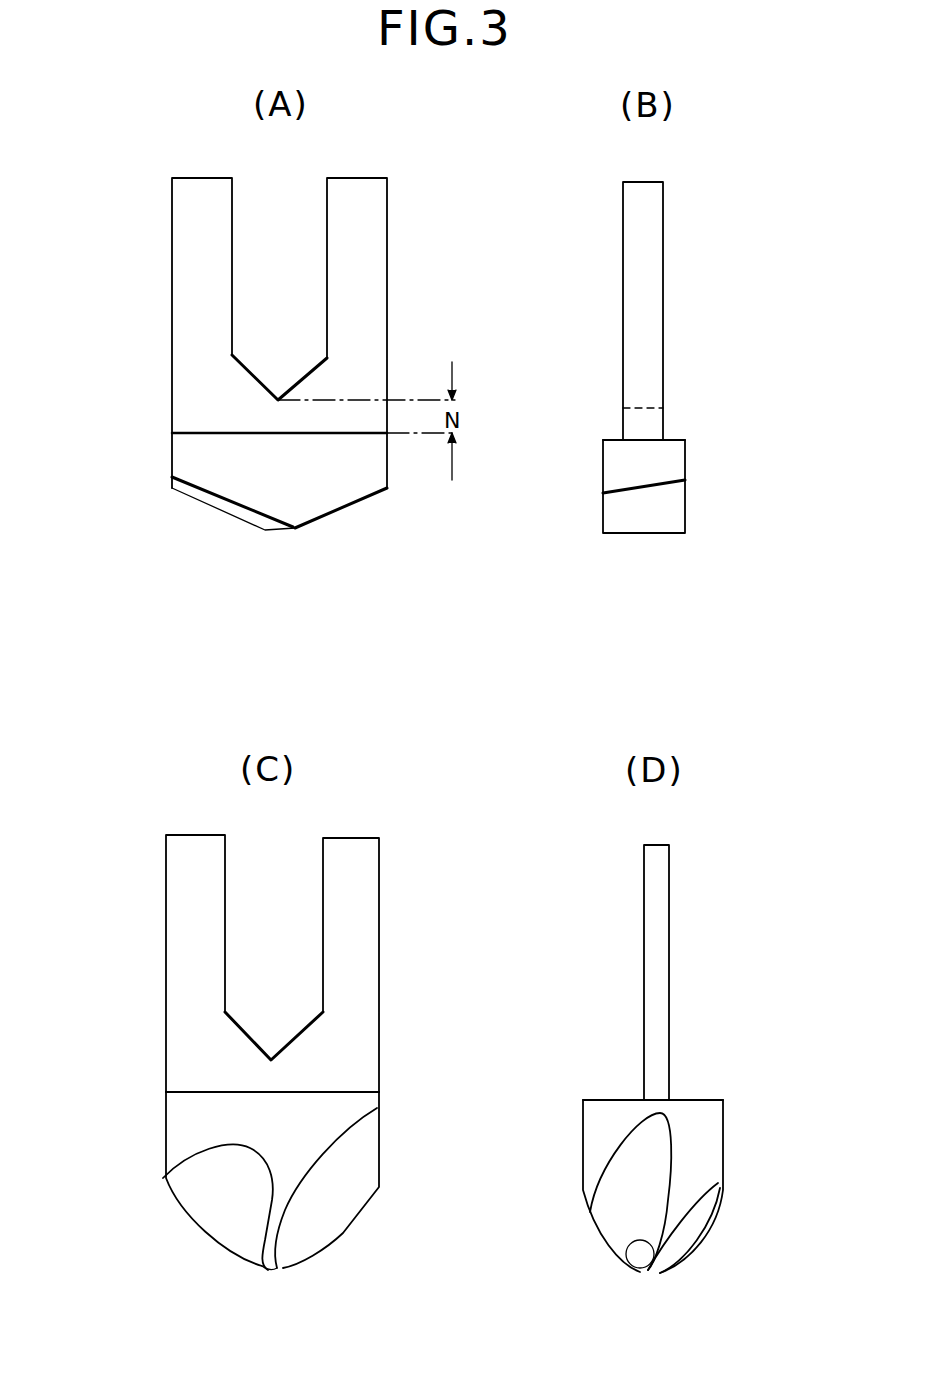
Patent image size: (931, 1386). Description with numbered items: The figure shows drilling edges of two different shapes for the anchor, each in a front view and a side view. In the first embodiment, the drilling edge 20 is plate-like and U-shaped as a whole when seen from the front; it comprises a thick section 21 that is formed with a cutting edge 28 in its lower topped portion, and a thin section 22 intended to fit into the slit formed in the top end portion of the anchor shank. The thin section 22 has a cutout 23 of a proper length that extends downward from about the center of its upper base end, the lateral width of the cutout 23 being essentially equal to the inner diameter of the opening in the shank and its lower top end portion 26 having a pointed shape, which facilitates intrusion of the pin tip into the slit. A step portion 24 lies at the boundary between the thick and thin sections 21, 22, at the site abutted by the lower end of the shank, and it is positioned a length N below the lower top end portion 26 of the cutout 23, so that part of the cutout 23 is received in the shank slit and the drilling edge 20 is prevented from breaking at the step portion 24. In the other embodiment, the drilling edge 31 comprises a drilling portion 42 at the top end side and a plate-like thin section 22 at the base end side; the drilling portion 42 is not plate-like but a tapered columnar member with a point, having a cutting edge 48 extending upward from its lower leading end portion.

The drilling edge 20 is at (386, 459).
The thick section 21 is at (287, 490).
The thin section 22 is at (363, 247).
The cutout 23 is at (281, 283).
The step portion 24 is at (243, 432).
The lower top end portion 26 is at (278, 393).
The cutting edge 28 is at (362, 503).
The drilling edge 31 is at (383, 1057).
The drilling portion 42 is at (273, 1222).
The cutting edge 48 is at (337, 1238).